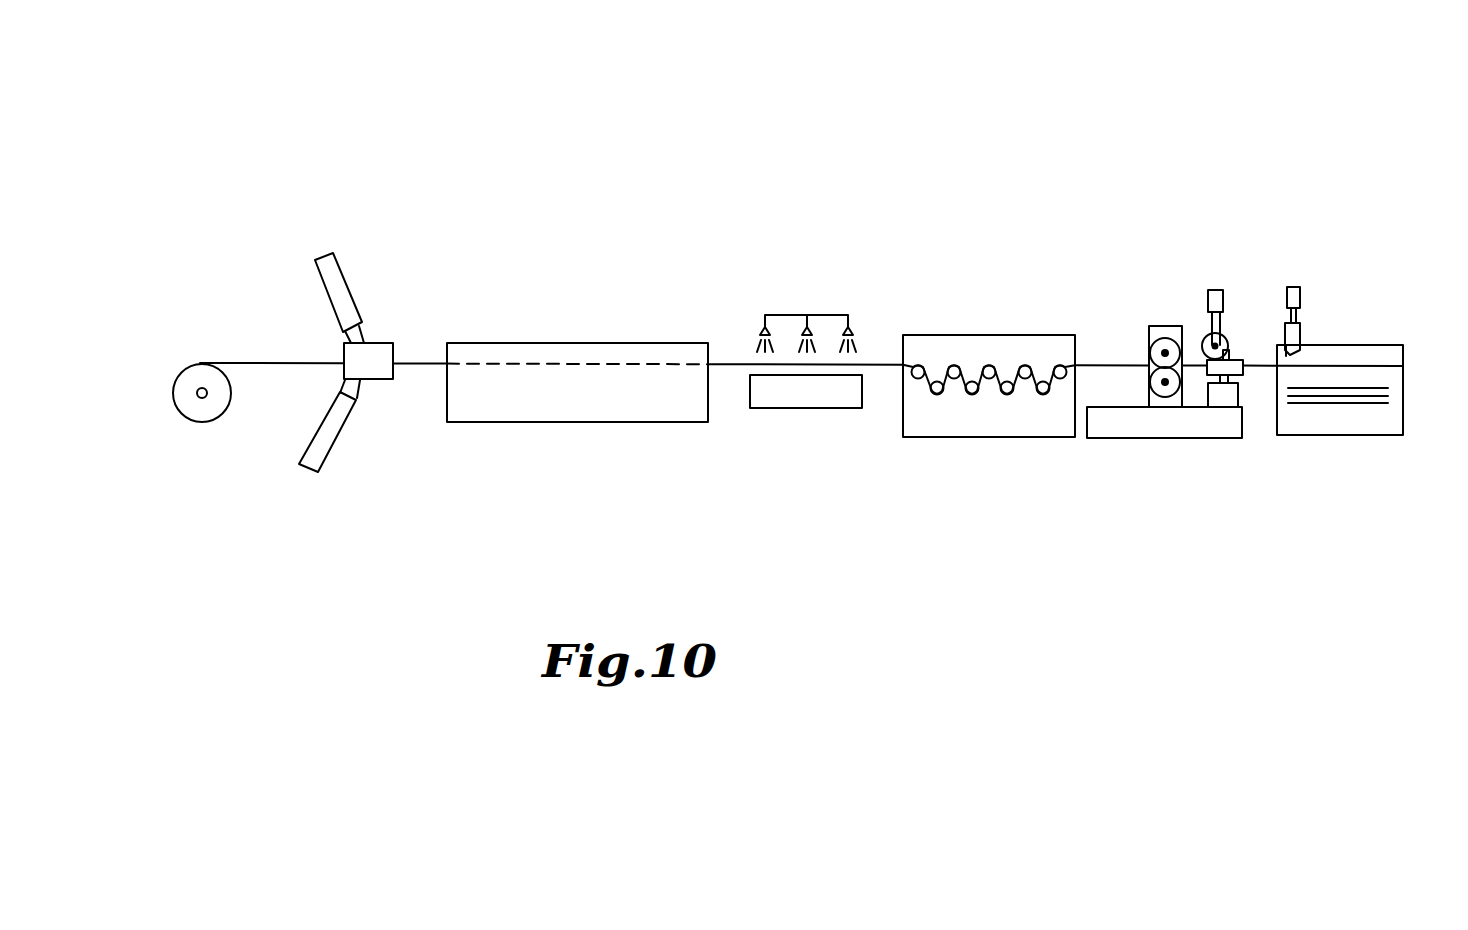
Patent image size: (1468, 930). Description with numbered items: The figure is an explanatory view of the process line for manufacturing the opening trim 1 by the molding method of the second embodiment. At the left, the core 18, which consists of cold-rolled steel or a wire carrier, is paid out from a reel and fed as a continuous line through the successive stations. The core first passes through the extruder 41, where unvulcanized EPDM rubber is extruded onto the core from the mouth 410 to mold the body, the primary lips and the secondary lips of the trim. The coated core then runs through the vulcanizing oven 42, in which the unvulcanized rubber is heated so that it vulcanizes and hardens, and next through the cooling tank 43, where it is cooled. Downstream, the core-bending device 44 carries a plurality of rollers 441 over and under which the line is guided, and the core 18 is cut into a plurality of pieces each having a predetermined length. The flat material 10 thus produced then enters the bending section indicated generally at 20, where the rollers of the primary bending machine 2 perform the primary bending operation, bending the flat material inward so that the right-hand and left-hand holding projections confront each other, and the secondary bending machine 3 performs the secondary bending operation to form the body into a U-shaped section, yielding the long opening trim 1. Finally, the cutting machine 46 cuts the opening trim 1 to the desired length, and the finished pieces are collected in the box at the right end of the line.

The opening trim 1 is at (1263, 366).
The primary bending machine 2 is at (1166, 306).
The secondary bending machine 3 is at (1229, 320).
The flat material 10 is at (1113, 366).
The core 18 is at (275, 364).
The cutting unit 20 is at (1158, 131).
The extruder 41 is at (389, 303).
The mouth 410 is at (378, 358).
The vulcanizing oven 42 is at (598, 352).
The cooling tank 43 is at (804, 301).
The core-bending device 44 is at (987, 303).
The rollers 441 is at (937, 395).
The cutting machine 46 is at (1300, 332).